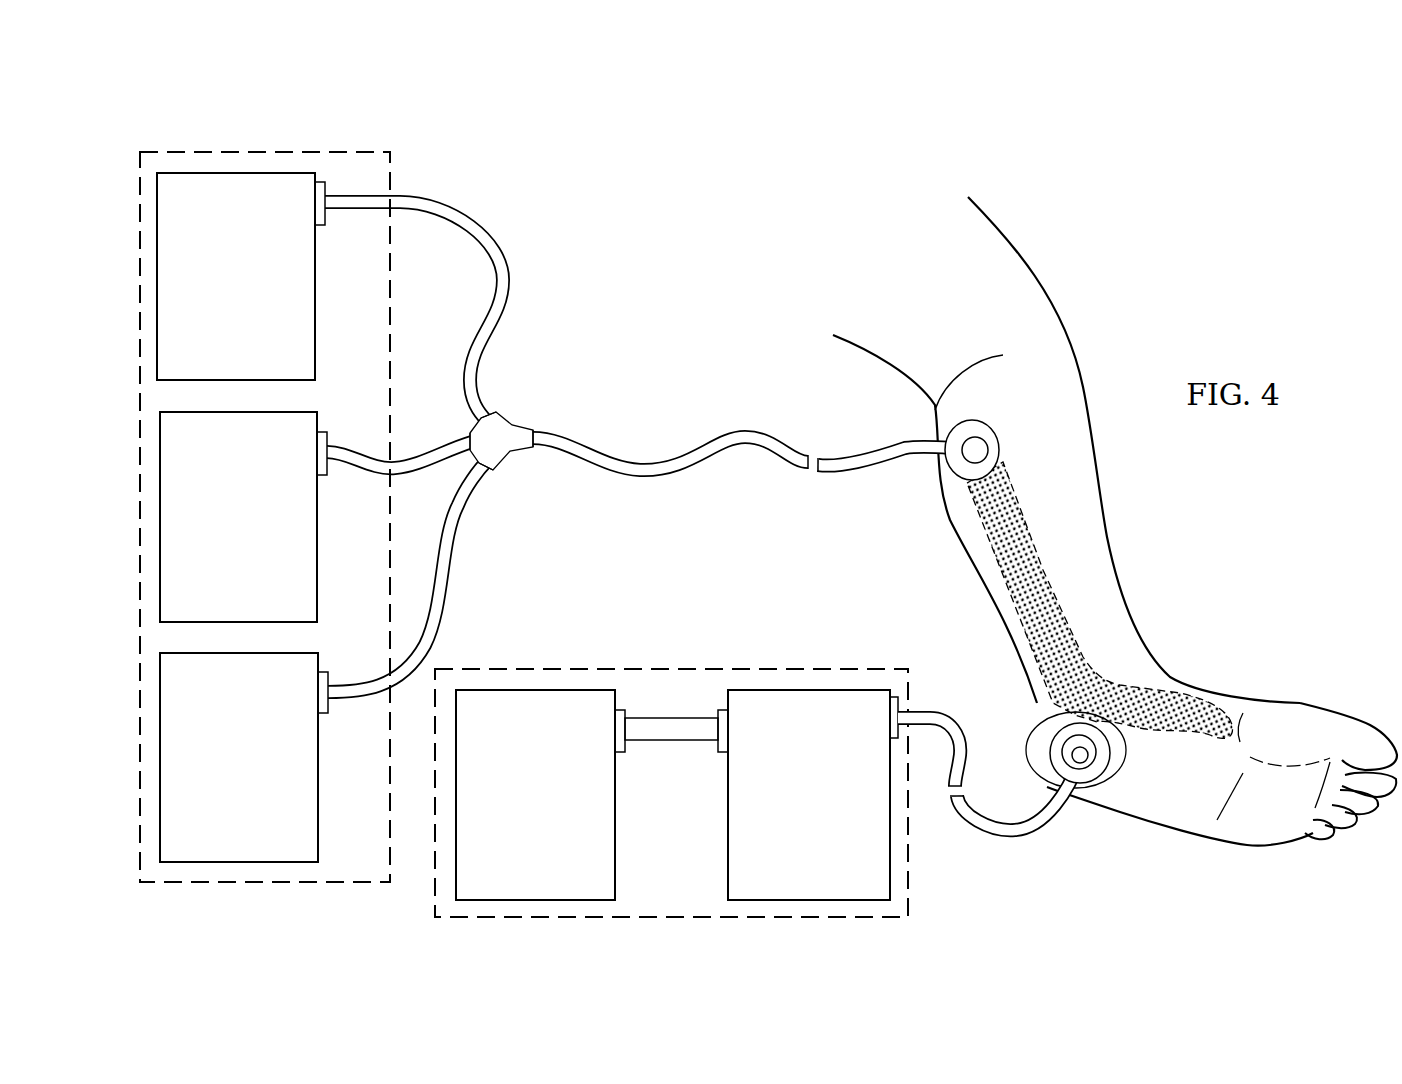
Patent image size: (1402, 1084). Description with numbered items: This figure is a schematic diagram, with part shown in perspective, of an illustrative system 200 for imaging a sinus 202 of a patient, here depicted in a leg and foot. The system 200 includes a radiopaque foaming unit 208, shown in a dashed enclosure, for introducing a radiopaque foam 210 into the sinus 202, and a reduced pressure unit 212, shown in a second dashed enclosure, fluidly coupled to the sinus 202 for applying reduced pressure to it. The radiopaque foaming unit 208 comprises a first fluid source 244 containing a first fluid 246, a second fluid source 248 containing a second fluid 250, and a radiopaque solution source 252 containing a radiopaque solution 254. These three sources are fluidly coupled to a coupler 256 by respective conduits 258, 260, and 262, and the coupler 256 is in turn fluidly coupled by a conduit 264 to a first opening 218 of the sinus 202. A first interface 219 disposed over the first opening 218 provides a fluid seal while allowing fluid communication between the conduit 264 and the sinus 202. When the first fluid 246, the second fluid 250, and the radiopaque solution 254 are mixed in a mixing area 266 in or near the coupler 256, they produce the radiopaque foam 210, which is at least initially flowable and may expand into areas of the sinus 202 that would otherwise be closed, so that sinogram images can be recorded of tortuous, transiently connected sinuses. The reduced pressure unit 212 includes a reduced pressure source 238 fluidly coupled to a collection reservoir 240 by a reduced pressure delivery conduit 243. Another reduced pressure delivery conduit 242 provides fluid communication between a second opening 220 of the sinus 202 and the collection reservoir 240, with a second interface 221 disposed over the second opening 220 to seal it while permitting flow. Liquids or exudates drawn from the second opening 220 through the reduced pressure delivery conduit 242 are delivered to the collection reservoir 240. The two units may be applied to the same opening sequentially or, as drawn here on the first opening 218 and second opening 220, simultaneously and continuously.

The system 200 is at (1089, 168).
The sinus 202 is at (976, 527).
The radiopaque foaming unit 208 is at (231, 143).
The radiopaque foam 210 is at (1000, 570).
The reduced pressure unit 212 is at (920, 847).
The first opening 218 is at (995, 452).
The first interface 219 is at (976, 438).
The second opening 220 is at (1118, 752).
The second interface 221 is at (1085, 777).
The reduced pressure source 238 is at (540, 795).
The collection reservoir 240 is at (808, 795).
The reduced pressure delivery conduit 242 is at (1020, 833).
The reduced pressure delivery conduit 243 is at (672, 742).
The first fluid source 244 is at (241, 276).
The first fluid 246 is at (235, 335).
The second fluid source 248 is at (243, 517).
The second fluid 250 is at (238, 575).
The radiopaque solution source 252 is at (244, 757).
The radiopaque solution 254 is at (240, 815).
The coupler 256 is at (511, 423).
The conduit 258 is at (420, 196).
The conduit 260 is at (350, 446).
The conduit 262 is at (360, 701).
The conduit 264 is at (645, 480).
The mixing area 266 is at (540, 450).